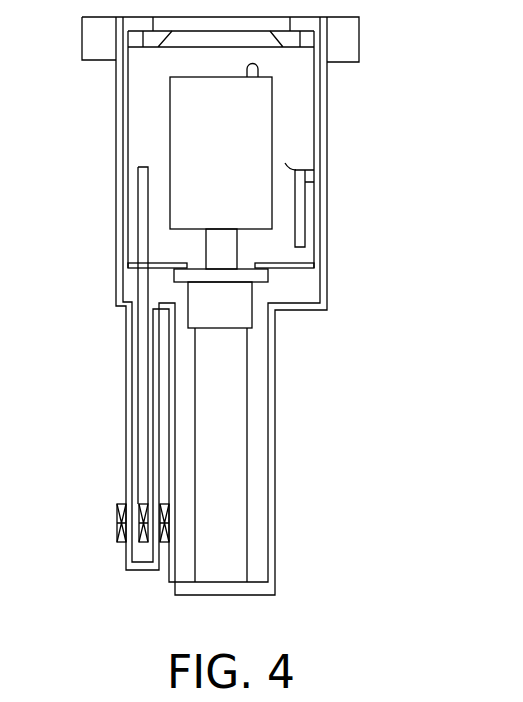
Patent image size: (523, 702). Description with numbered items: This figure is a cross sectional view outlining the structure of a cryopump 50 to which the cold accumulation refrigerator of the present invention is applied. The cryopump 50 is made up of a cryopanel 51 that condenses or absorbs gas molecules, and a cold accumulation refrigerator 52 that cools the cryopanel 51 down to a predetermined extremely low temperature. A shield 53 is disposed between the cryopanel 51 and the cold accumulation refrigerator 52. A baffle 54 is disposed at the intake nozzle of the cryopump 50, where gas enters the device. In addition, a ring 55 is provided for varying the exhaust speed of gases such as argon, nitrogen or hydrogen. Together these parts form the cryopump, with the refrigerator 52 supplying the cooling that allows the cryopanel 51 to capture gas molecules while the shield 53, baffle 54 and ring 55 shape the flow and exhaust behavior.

The cryopump 50 is at (363, 220).
The cryopanel 51 is at (258, 138).
The cold accumulation refrigerator 52 is at (248, 443).
The shield 53 is at (297, 270).
The baffle 54 is at (178, 47).
The ring 55 is at (157, 163).